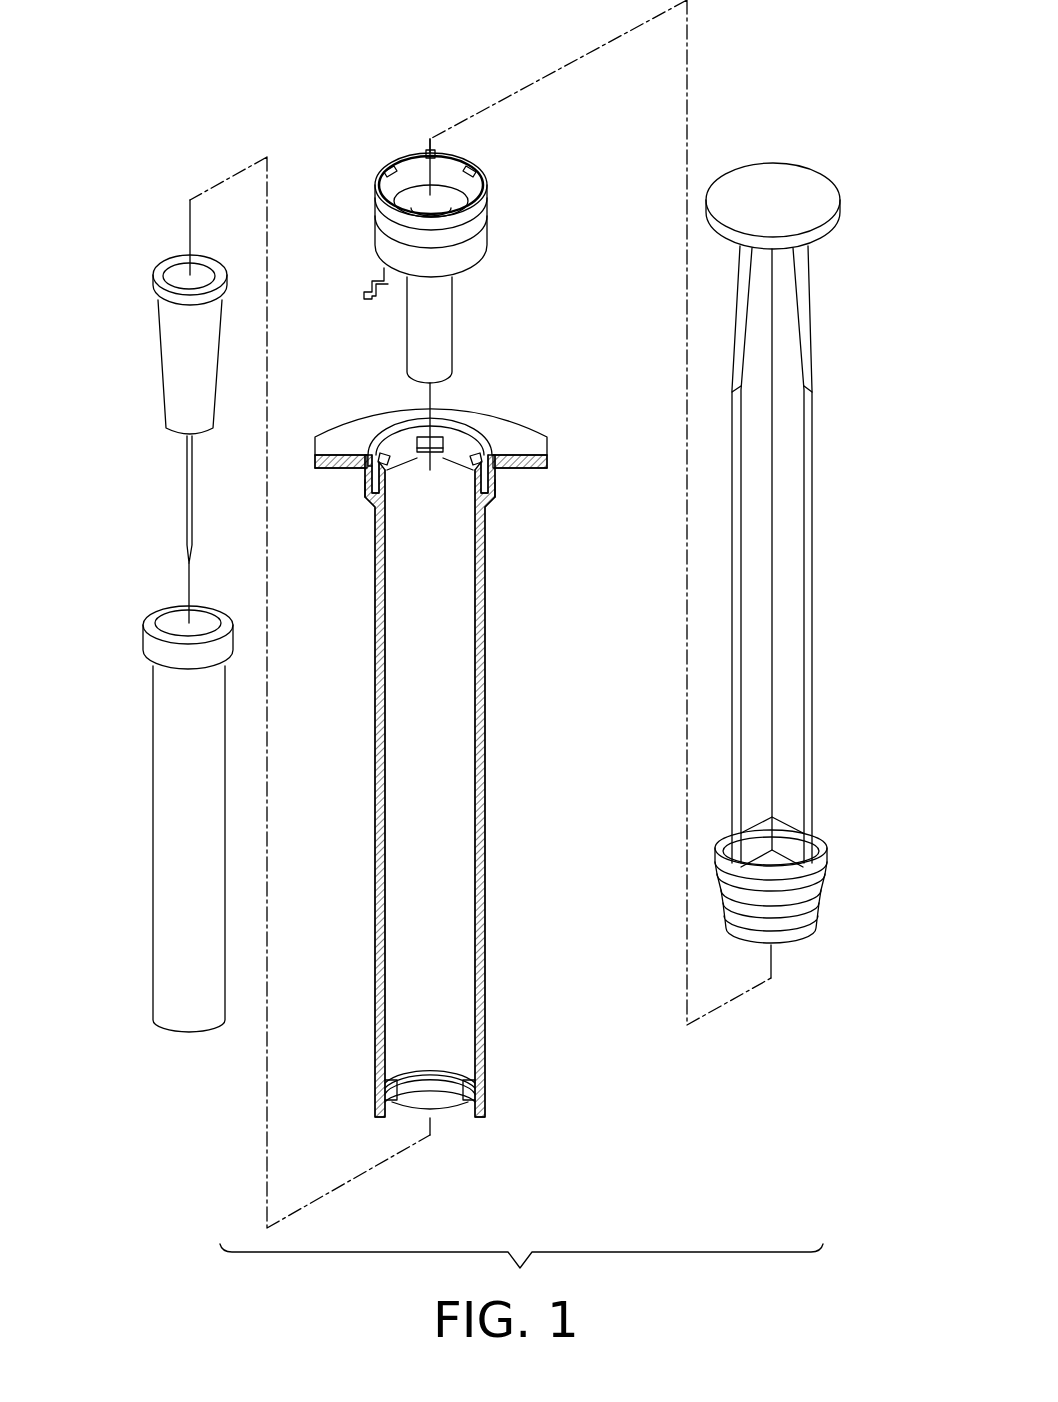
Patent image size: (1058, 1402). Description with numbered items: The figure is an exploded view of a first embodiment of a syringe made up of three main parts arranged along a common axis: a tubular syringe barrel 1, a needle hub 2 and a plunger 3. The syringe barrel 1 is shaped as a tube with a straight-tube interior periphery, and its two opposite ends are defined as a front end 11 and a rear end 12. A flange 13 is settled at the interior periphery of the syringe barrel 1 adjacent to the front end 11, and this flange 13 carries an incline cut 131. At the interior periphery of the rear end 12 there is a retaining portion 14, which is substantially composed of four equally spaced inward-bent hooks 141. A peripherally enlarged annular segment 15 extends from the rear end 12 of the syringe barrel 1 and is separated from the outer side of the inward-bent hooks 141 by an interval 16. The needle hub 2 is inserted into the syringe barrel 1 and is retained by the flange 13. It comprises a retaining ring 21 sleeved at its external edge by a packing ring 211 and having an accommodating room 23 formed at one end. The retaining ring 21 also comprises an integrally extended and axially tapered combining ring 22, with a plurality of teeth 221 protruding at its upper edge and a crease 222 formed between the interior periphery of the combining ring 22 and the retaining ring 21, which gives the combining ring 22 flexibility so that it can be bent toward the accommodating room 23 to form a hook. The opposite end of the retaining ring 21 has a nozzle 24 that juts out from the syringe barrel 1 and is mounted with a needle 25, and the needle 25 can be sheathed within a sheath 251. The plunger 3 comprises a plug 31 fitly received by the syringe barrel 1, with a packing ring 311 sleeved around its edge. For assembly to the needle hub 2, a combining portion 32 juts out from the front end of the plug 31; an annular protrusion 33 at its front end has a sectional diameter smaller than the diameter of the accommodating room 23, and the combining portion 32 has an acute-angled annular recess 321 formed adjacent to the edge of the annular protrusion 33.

The syringe barrel 1 is at (496, 746).
The front end 11 is at (471, 1098).
The rear end 12 is at (496, 425).
The flange 13 is at (482, 1078).
The incline cut 131 is at (386, 1082).
The retaining portion 14 is at (496, 487).
The inward-bent hooks 141 is at (418, 440).
The peripherally enlarged annular segment 15 is at (368, 488).
The interval 16 is at (378, 453).
The needle hub 2 is at (446, 230).
The retaining ring 21 is at (487, 262).
The packing ring 211 is at (487, 222).
The combining ring 22 is at (428, 152).
The teeth 221 is at (475, 170).
The crease 222 is at (393, 166).
The accommodating room 23 is at (382, 176).
The nozzle 24 is at (441, 322).
The needle 25 is at (172, 342).
The sheath 251 is at (185, 1022).
The plunger 3 is at (806, 590).
The plug 31 is at (826, 846).
The packing ring 311 is at (823, 870).
The combining portion 32 is at (819, 904).
The acute-angled annular recess 321 is at (815, 918).
The annular protrusion 33 is at (806, 936).